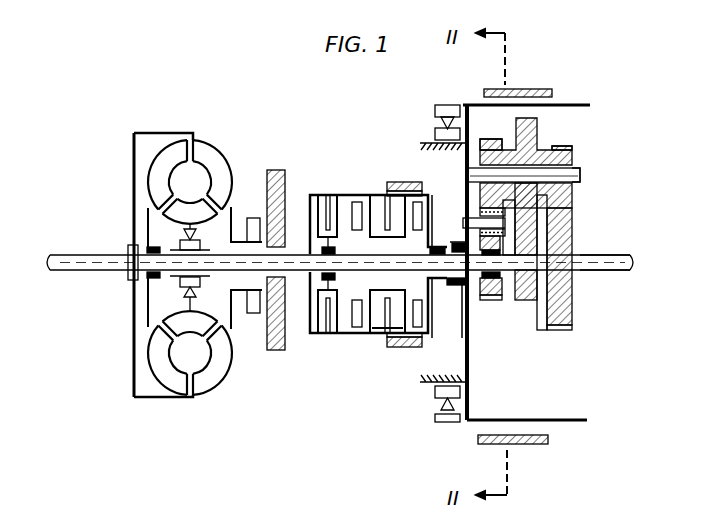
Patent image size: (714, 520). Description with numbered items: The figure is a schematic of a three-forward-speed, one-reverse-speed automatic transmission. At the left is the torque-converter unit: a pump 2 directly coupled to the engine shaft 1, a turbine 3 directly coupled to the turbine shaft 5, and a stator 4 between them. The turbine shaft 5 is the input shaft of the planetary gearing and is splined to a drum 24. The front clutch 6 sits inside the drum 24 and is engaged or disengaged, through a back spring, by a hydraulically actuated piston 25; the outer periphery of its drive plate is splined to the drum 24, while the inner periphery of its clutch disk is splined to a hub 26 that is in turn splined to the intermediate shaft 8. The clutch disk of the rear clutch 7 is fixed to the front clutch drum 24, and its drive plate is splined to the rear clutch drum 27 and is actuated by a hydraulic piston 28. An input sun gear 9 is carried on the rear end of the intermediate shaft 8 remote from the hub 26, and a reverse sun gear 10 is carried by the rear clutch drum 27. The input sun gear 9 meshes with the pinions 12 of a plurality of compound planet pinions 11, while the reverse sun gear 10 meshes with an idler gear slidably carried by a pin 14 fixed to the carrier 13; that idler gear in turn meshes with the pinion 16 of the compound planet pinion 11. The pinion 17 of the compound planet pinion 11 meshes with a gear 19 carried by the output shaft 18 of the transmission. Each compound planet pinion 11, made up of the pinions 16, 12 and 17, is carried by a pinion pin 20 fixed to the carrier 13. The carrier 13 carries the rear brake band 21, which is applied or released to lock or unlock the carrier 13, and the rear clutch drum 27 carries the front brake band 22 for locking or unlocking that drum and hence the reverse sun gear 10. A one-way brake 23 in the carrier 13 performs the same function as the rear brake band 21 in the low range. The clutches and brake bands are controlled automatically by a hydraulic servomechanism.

The engine shaft 1 is at (71, 272).
The pump 2 is at (217, 160).
The turbine 3 is at (162, 160).
The stator 4 is at (176, 214).
The turbine shaft 5 is at (288, 278).
The front clutch 6 is at (327, 334).
The rear clutch 7 is at (385, 329).
The intermediate shaft 8 is at (452, 279).
The input sun gear 9 is at (527, 302).
The reverse sun gear 10 is at (490, 298).
The compound planet pinions 11 is at (556, 147).
The pinion 12 is at (538, 122).
The carrier 13 is at (468, 178).
The pin 14 is at (465, 222).
The pinion 16 is at (486, 142).
The pinion 17 is at (578, 168).
The output shaft 18 is at (592, 272).
The gear 19 is at (573, 235).
The pinion pin 20 is at (583, 175).
The rear brake band 21 is at (545, 89).
The front brake band 22 is at (395, 182).
The one-way brake 23 is at (435, 132).
The drum 24 is at (320, 195).
The piston 25 is at (357, 202).
The hub 26 is at (325, 284).
The rear clutch drum 27 is at (390, 347).
The piston 28 is at (415, 328).